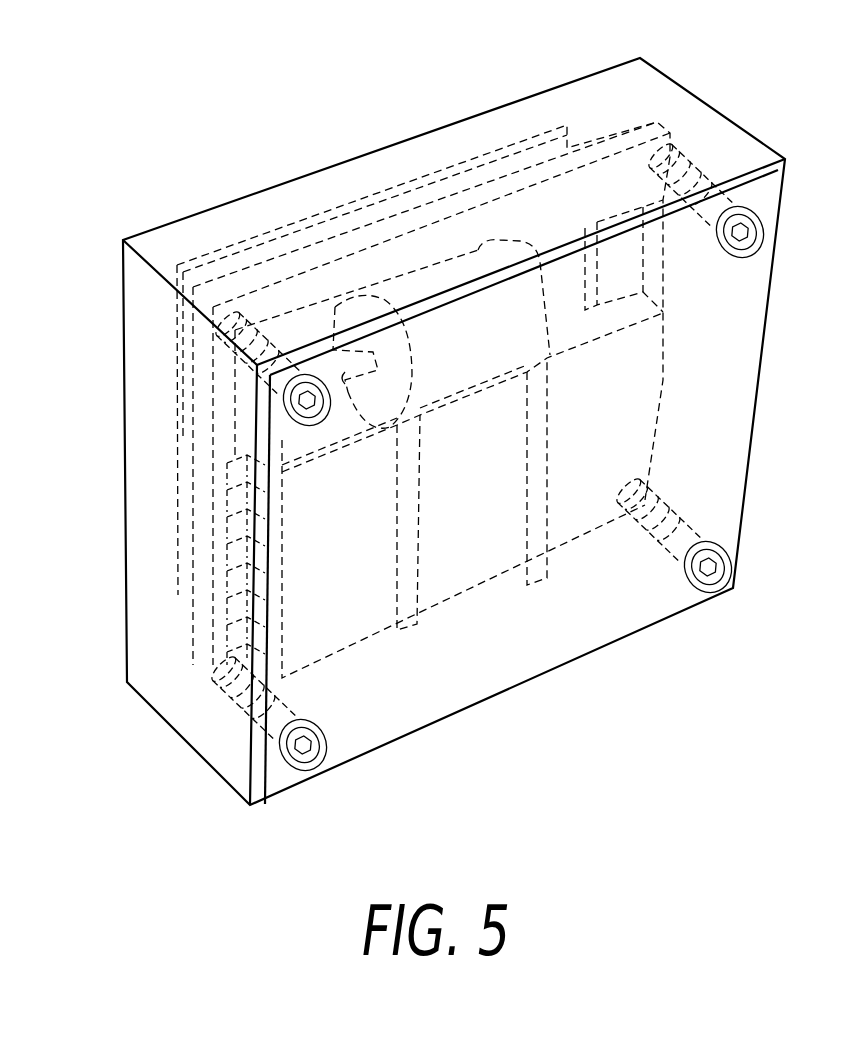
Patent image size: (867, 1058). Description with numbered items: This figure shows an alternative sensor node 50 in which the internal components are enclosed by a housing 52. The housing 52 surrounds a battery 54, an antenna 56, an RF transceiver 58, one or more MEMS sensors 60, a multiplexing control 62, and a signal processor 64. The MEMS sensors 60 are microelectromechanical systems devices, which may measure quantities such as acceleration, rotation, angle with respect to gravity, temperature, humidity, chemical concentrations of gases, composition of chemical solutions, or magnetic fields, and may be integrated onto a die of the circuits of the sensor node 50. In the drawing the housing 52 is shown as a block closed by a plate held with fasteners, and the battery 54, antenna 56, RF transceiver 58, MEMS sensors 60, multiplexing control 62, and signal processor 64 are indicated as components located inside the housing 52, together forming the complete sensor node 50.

The sensor node 50 is at (575, 723).
The housing 52 is at (296, 760).
The battery 54 is at (399, 196).
The antenna 56 is at (345, 302).
The RF transceiver 58 is at (266, 546).
The MEMS sensors 60 is at (624, 277).
The multiplexing control 62 is at (455, 550).
The signal processor 64 is at (598, 408).